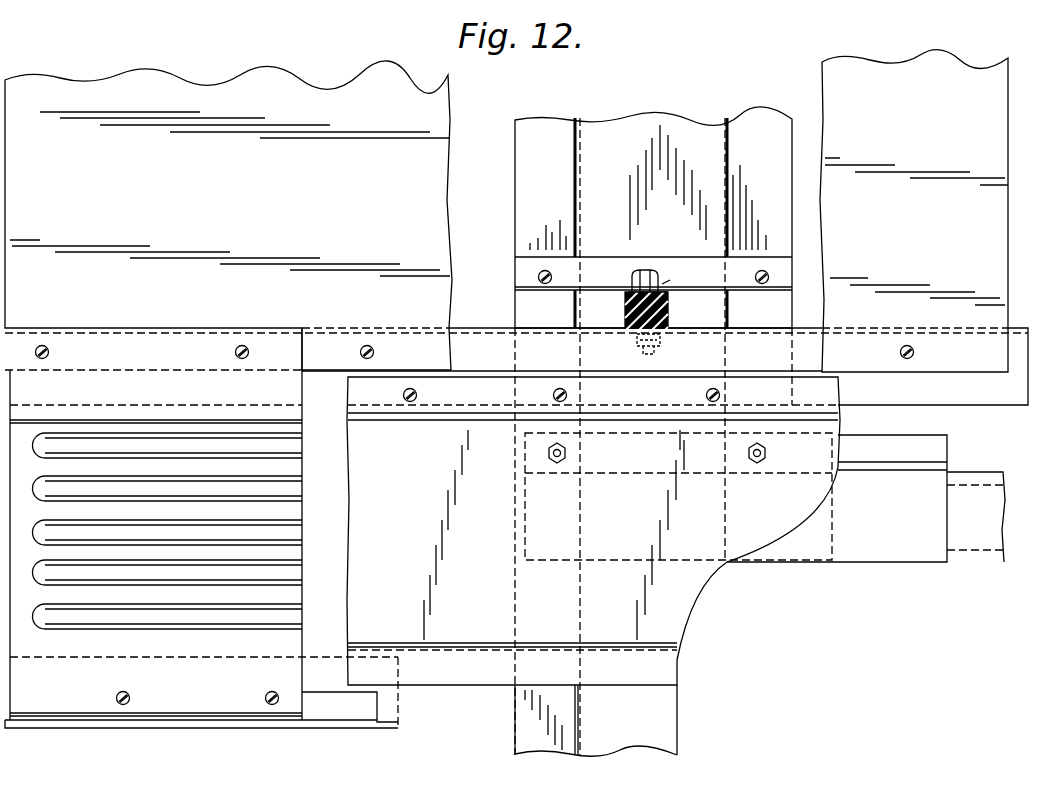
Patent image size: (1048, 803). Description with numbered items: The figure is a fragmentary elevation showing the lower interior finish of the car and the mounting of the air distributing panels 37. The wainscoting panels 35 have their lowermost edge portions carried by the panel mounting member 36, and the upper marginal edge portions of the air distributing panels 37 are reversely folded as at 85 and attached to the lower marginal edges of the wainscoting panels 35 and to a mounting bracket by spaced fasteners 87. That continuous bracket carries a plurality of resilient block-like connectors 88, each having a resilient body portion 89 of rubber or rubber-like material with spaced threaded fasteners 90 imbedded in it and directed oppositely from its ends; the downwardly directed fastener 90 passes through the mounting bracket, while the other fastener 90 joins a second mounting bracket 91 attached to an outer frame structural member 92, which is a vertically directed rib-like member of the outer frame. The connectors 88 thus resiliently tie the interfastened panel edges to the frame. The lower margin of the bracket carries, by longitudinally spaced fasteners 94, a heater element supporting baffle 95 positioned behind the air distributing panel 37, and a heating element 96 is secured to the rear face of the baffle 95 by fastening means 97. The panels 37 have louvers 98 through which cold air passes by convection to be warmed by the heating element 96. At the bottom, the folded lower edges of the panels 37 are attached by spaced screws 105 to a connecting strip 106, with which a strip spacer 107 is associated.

The wainscoting panels 35 is at (180, 200).
The reversely folded upper marginal edge portion 85 is at (135, 333).
The spaced fasteners 87 is at (932, 352).
The air distributing panels 37 is at (155, 399).
The louvers 98 is at (192, 488).
The screws 105 is at (265, 697).
The connecting strip 106 is at (163, 728).
The strip spacer 107 is at (347, 710).
The outer frame structural member 92 is at (746, 128).
The panel mounting member 36 is at (739, 250).
The second mounting bracket 91 is at (603, 265).
The threaded fasteners 90 is at (645, 272).
The resilient body portion 89 is at (628, 292).
The resilient block-like connectors 88 is at (670, 279).
The longitudinally spaced fasteners 94 is at (735, 395).
The fastening means 97 is at (794, 453).
The heater element supporting baffle 95 is at (662, 522).
The heating element 96 is at (980, 530).